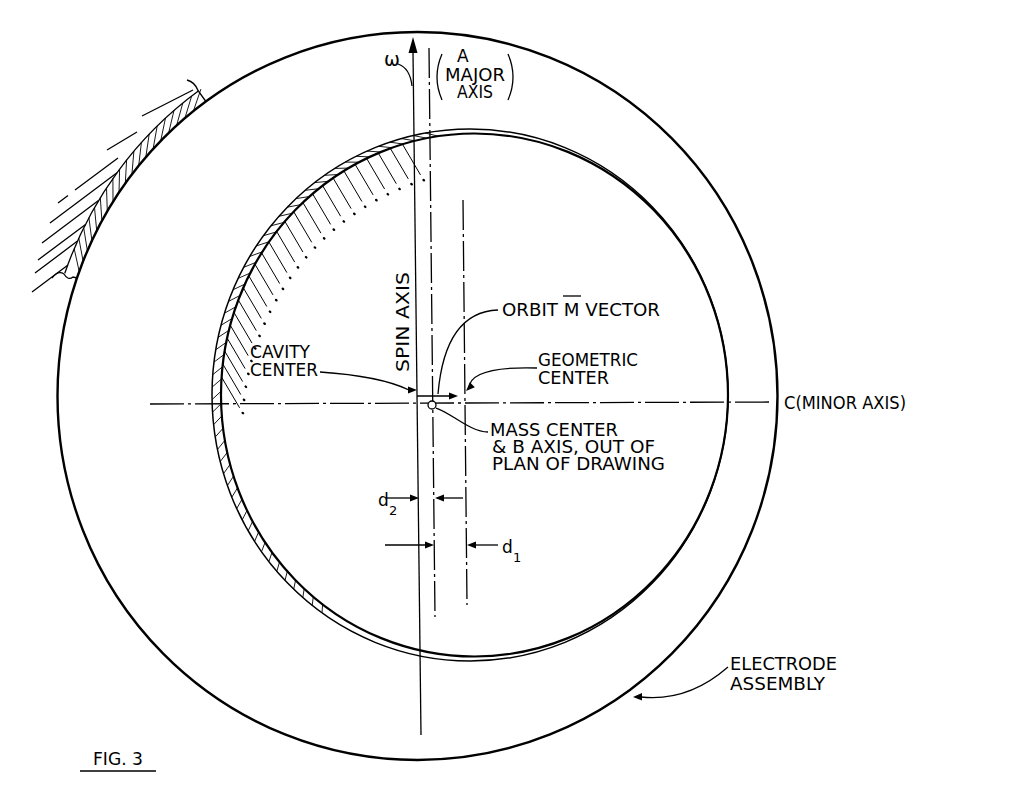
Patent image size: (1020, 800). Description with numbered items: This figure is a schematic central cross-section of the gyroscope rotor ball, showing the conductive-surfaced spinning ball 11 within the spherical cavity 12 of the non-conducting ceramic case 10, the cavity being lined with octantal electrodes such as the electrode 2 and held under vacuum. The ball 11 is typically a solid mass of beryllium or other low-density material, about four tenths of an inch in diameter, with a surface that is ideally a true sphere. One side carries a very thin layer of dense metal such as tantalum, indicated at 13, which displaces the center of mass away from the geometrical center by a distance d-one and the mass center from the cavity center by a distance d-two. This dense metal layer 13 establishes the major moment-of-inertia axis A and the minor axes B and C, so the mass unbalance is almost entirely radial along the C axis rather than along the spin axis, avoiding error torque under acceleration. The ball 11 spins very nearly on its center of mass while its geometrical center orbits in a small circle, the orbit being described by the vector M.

The octantal electrode 2 is at (201, 100).
The non-conducting ceramic case 10 is at (104, 171).
The spinning ball 11 is at (612, 173).
The spherical cavity 12 is at (68, 302).
The dense metal layer 13 is at (238, 268).